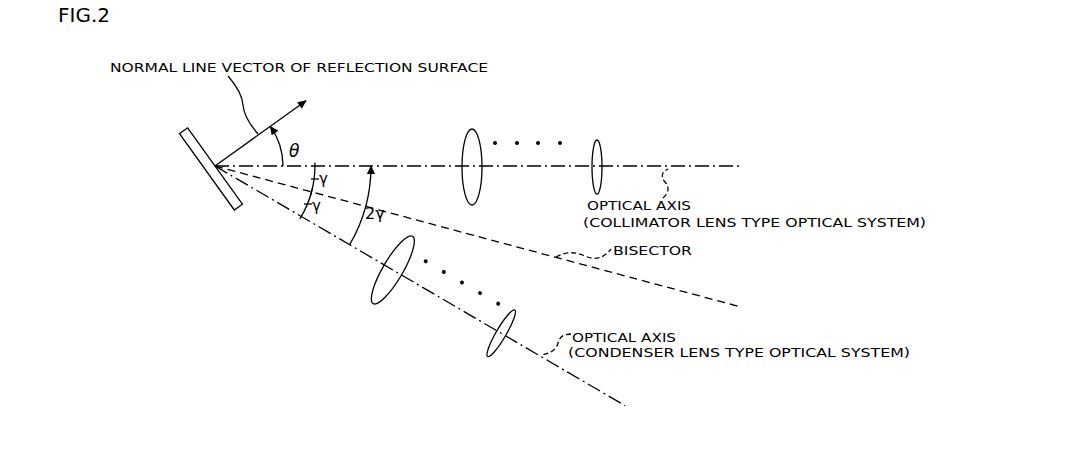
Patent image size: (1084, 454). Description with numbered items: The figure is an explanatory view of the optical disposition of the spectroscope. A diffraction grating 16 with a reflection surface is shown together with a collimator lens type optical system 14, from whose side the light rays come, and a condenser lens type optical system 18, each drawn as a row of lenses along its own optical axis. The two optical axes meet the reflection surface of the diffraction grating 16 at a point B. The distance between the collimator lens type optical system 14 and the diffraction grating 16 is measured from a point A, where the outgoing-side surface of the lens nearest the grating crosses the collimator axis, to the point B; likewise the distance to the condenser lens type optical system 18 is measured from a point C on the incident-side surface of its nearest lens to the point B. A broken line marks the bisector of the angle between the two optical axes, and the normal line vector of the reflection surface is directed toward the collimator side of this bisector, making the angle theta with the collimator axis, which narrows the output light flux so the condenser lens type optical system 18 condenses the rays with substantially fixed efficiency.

The collimator lens type optical system 14 is at (603, 122).
The diffraction grating 16 is at (216, 184).
The condenser lens type optical system 18 is at (439, 313).
The point A is at (463, 160).
The point B is at (215, 159).
The point C is at (378, 268).